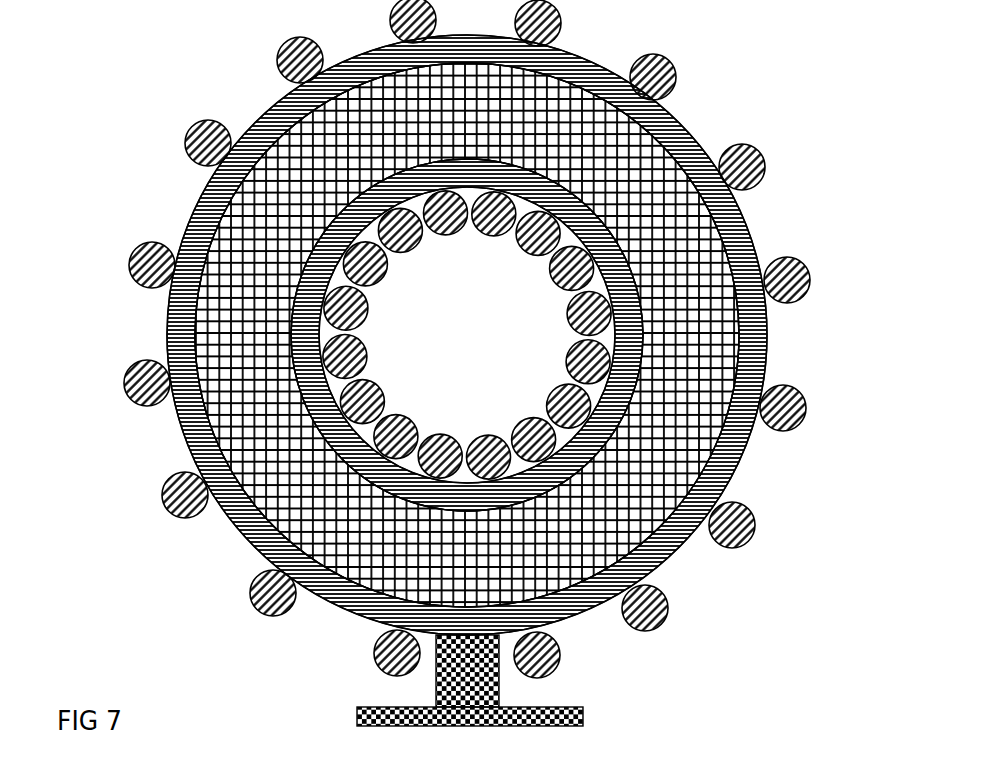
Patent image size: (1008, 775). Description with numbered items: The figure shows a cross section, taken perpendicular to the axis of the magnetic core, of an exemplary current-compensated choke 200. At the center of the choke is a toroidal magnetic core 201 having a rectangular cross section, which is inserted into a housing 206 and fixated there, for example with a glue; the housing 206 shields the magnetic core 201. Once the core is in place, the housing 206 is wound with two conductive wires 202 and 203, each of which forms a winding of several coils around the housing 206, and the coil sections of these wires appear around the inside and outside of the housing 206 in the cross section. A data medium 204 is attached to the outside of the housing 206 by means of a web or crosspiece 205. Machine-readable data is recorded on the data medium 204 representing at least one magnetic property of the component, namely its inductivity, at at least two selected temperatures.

The current-compensated choke 200 is at (148, 602).
The toroidal magnetic core 201 is at (657, 220).
The wire 202 is at (198, 138).
The wire 203 is at (667, 58).
The data medium 204 is at (383, 717).
The web 205 is at (477, 690).
The housing 206 is at (747, 248).